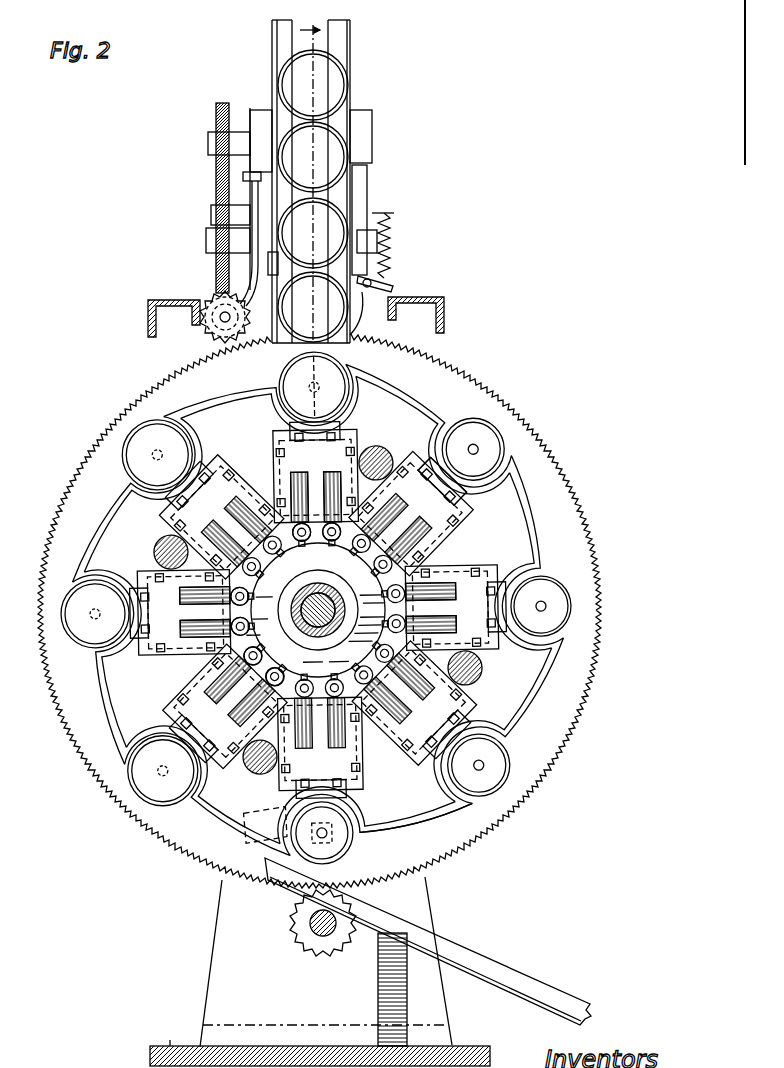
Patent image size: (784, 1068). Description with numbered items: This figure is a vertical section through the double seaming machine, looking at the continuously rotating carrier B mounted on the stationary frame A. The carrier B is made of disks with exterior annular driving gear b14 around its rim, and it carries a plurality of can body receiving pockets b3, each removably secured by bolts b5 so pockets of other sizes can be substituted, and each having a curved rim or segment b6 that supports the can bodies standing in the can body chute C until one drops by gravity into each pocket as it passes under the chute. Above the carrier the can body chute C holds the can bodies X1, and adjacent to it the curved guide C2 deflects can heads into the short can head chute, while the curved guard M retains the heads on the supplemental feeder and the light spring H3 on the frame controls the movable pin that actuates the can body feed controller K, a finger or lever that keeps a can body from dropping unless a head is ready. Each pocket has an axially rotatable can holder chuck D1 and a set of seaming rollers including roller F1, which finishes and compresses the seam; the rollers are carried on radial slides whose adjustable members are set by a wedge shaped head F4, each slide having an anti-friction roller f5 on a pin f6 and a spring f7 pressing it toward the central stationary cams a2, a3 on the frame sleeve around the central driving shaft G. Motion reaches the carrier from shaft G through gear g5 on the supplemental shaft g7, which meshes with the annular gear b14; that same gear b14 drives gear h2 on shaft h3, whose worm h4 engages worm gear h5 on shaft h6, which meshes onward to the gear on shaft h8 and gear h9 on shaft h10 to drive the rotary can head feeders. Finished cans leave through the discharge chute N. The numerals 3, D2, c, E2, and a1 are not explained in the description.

The can body chute C is at (272, 33).
The section line indicator 3 is at (310, 19).
The curved guide C2 is at (317, 240).
The curved guard or guide device M is at (372, 149).
The can body feed controller K is at (398, 265).
The can body X1 is at (337, 127).
The light spring H3 is at (248, 160).
The gear h9 is at (217, 103).
The shaft h10 is at (208, 144).
The shaft h8 is at (211, 208).
The shaft h6 is at (206, 242).
The worm gear h5 is at (220, 263).
The worm h4 is at (200, 296).
The shaft h3 is at (215, 333).
The gear h2 is at (220, 318).
The stationary frame A is at (148, 322).
The exterior annular driving gear b14 is at (92, 443).
The can body receiving pocket b3 is at (445, 447).
The curved rim or segment b6 is at (473, 813).
The axially rotatable can holder chuck D1 is at (491, 430).
The roller D2 is at (481, 452).
The continuously rotating carrier B is at (274, 442).
The central stationary cam a3 is at (313, 585).
The central driving shaft G is at (338, 602).
The hub c is at (315, 629).
The central stationary cam a2 is at (318, 610).
The bolts b5 is at (318, 610).
The wedge shaped head F4 is at (335, 447).
The seaming roller F1 is at (290, 432).
The slide E'' E2 is at (467, 500).
The pin f6 is at (336, 548).
The anti-friction roller f5 is at (250, 611).
The spring f7 is at (264, 667).
The bar a' a1 is at (266, 816).
The discharge chute N is at (480, 956).
The gear g5 is at (296, 938).
The supplemental shaft g7 is at (320, 937).